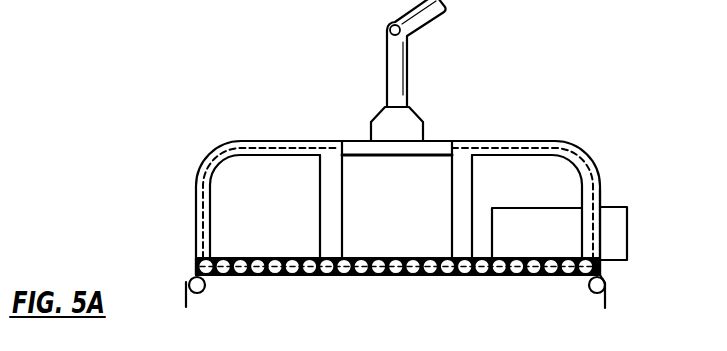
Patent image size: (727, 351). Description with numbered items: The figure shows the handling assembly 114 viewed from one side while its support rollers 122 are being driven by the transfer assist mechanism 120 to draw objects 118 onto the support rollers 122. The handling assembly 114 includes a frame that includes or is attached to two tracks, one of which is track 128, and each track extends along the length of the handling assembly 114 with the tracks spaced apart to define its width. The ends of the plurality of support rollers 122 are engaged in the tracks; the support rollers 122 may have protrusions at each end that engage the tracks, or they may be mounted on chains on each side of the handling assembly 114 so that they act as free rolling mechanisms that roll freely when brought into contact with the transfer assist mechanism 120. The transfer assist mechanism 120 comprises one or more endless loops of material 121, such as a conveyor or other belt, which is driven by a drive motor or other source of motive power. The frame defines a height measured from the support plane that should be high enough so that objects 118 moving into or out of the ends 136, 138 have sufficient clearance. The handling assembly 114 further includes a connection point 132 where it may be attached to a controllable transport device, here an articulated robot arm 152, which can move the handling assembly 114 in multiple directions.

The end 138 is at (158, 210).
The handling assembly 114 is at (300, 139).
The track 128 is at (578, 152).
The end 136 is at (609, 168).
The objects 118 is at (637, 219).
The endless loop of material 121 is at (470, 277).
The connection point 132 is at (423, 124).
The articulated robot arm 152 is at (442, 14).
The support rollers 122 is at (257, 277).
The transfer assist mechanism 120 is at (189, 282).